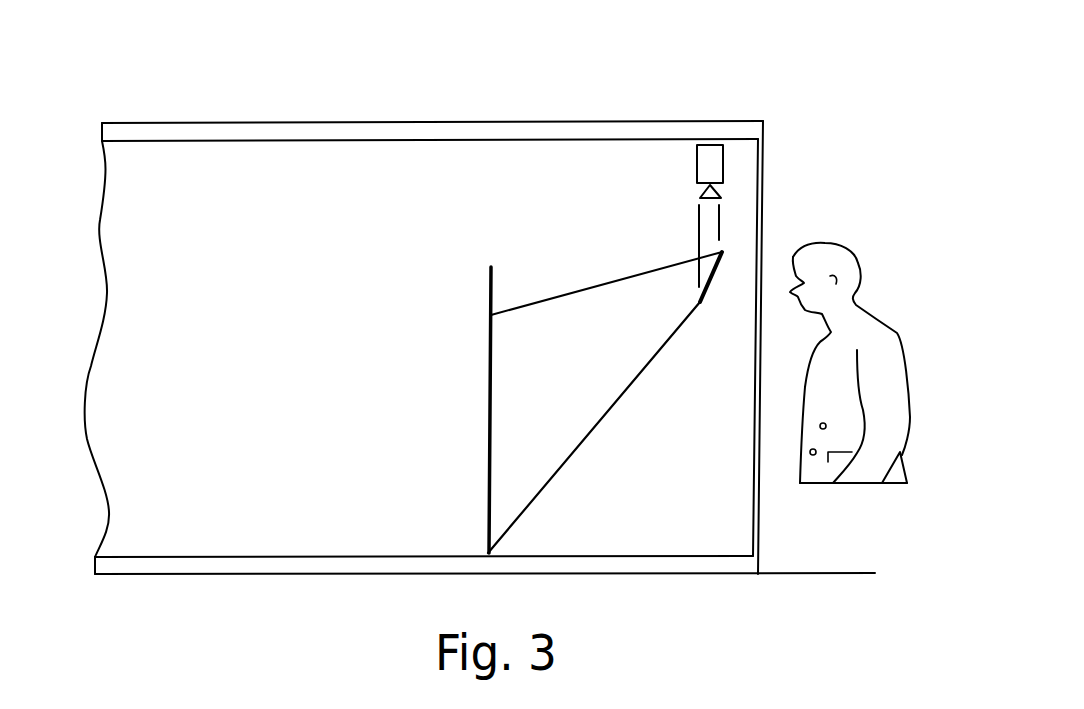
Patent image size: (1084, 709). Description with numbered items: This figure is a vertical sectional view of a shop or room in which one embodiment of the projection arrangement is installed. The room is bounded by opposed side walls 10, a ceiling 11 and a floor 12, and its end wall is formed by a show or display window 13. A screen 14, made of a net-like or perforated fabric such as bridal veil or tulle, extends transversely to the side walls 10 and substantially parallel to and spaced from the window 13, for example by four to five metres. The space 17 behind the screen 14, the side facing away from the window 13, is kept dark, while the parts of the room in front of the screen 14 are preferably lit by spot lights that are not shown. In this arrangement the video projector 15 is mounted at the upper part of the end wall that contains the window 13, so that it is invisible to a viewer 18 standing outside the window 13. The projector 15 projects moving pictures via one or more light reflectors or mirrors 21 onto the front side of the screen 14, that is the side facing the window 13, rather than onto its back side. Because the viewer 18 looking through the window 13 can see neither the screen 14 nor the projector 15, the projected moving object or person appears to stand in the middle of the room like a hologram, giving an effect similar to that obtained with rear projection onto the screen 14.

The side walls 10 is at (325, 172).
The ceiling 11 is at (223, 133).
The floor 12 is at (360, 565).
The show window 13 is at (755, 535).
The screen 14 is at (494, 266).
The video projector 15 is at (700, 168).
The space behind the screen 17 is at (386, 172).
The viewer 18 is at (840, 265).
The mirror 21 is at (724, 257).